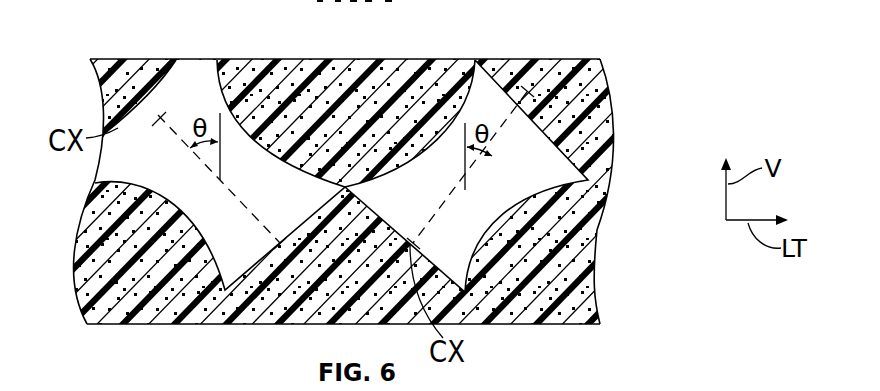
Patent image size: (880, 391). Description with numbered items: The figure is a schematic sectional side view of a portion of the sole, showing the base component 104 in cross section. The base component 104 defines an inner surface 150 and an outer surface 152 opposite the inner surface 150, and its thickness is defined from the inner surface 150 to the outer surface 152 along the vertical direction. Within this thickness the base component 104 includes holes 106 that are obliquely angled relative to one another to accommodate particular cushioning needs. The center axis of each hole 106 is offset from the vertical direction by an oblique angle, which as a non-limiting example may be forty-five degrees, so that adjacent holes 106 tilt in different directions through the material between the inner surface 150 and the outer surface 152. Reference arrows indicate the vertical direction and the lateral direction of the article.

The base component 104 is at (567, 253).
The holes 106 is at (175, 99).
The inner surface 150 is at (470, 53).
The outer surface 152 is at (532, 332).